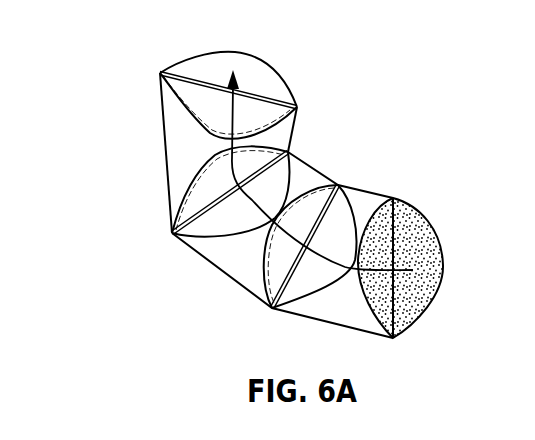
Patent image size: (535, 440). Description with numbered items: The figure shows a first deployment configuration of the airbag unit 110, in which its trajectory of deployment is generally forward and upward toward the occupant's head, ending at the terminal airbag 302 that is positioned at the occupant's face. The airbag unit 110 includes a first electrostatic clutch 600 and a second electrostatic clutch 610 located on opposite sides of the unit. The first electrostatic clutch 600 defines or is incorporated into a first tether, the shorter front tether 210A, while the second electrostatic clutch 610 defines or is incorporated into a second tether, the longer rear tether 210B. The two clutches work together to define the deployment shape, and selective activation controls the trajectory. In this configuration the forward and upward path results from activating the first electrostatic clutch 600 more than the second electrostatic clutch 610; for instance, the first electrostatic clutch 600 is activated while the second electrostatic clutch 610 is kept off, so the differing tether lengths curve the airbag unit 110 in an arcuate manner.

The airbag unit 110 is at (190, 70).
The terminal airbag 302 is at (262, 88).
The first electrostatic clutch 600 is at (315, 167).
The front tether 210A is at (375, 190).
The rear tether 210B is at (163, 143).
The second electrostatic clutch 610 is at (230, 277).